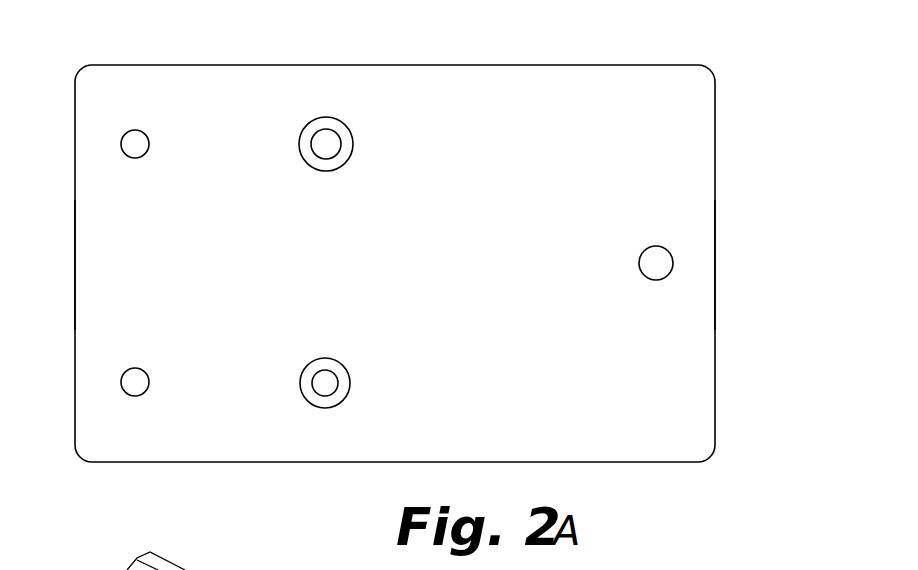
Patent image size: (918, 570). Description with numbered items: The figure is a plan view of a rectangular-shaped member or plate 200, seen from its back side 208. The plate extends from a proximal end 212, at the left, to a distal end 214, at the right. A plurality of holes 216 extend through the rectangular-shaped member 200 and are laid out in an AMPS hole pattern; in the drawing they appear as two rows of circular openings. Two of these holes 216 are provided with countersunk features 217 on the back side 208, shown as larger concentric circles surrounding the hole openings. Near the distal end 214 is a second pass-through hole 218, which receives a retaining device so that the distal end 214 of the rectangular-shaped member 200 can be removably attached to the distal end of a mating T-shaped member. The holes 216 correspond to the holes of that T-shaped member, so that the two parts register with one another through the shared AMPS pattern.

The rectangular-shaped member 200 is at (788, 125).
The back side 208 is at (528, 95).
The proximal end 212 is at (75, 338).
The distal end 214 is at (715, 340).
The holes 216 is at (322, 140).
The countersunk features 217 is at (349, 148).
The second pass-through hole 218 is at (640, 265).